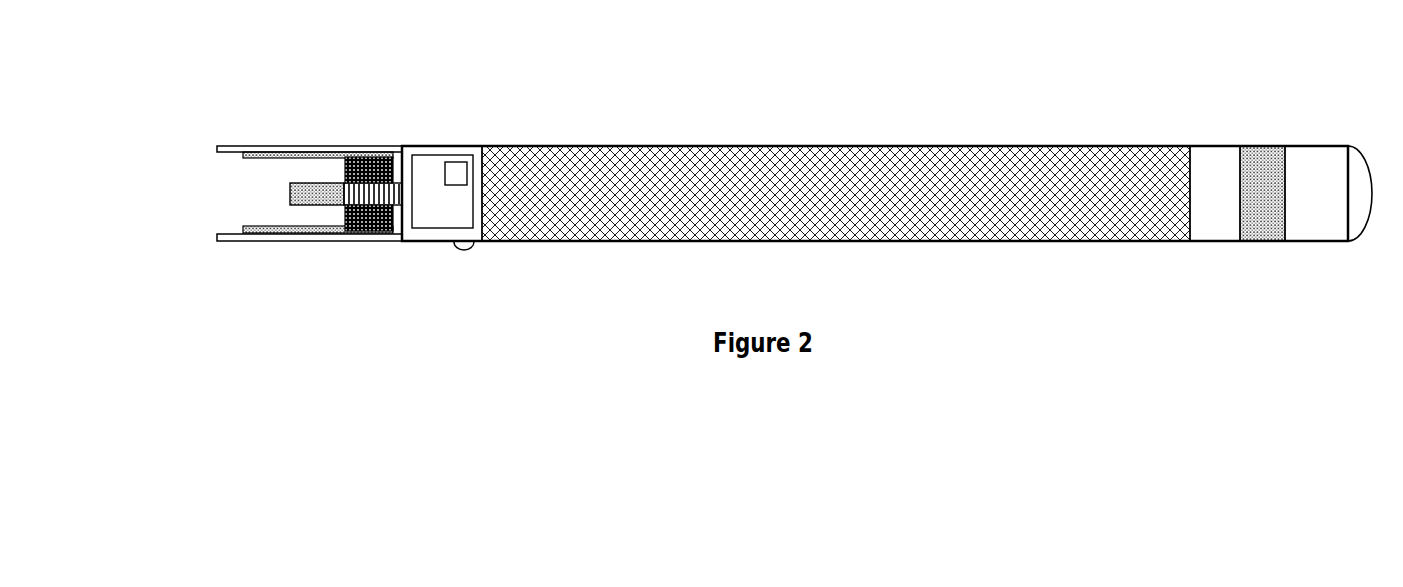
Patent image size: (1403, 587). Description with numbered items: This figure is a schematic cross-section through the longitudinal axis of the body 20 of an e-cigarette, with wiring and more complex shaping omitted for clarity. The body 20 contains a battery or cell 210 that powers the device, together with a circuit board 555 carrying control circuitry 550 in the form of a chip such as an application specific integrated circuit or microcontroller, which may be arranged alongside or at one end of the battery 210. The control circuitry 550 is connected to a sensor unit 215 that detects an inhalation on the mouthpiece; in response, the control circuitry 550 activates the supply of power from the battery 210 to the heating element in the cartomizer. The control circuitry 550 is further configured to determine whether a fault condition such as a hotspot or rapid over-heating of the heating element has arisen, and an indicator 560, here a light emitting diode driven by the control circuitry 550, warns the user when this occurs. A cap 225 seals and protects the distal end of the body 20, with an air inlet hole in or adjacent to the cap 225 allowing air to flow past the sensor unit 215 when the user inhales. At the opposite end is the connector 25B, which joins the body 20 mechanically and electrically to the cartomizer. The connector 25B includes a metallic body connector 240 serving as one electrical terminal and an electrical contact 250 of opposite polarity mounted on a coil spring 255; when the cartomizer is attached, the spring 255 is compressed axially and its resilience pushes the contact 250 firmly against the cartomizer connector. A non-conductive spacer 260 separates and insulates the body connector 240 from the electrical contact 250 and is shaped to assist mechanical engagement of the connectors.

The body 20 is at (903, 260).
The battery or cell 210 is at (835, 195).
The sensor unit 215 is at (1262, 197).
The cap 225 is at (1355, 195).
The connector 25B is at (310, 142).
The body connector 240 is at (229, 242).
The electrical contact 250 is at (315, 193).
The coil spring 255 is at (368, 197).
The spacer 260 is at (372, 160).
The control circuitry 550 is at (458, 160).
The circuit board 555 is at (433, 230).
The indicator 560 is at (467, 245).